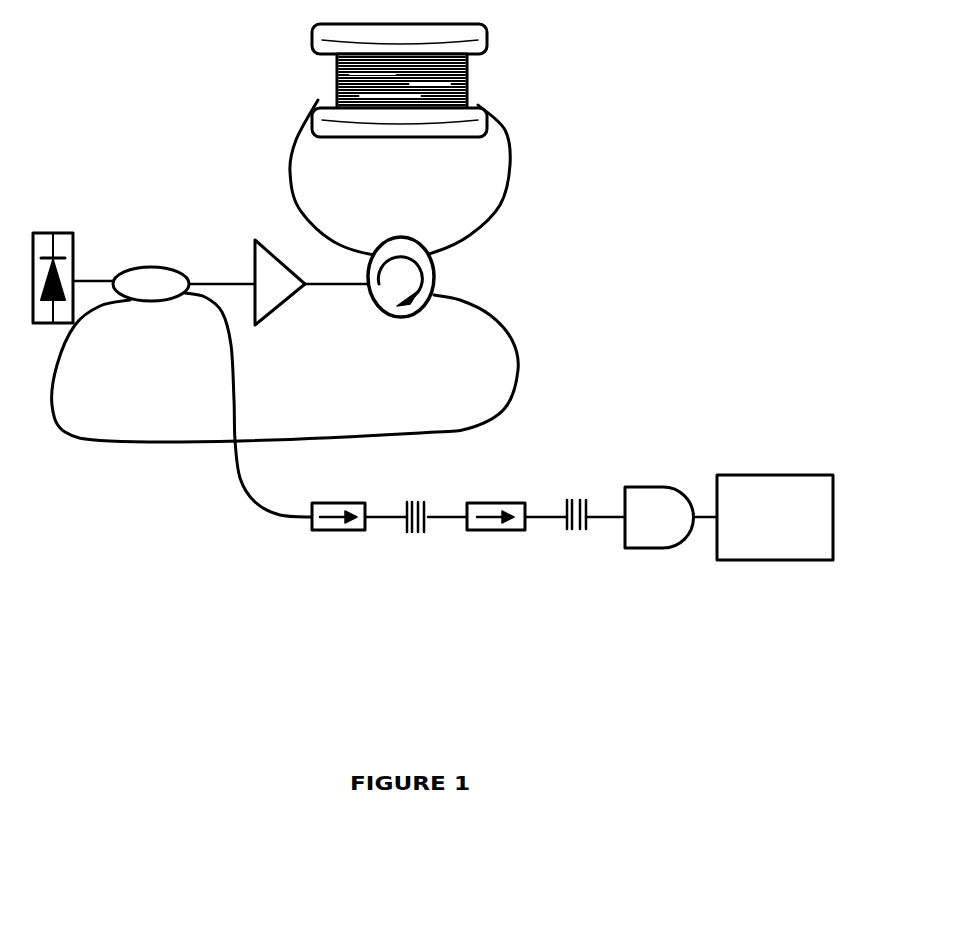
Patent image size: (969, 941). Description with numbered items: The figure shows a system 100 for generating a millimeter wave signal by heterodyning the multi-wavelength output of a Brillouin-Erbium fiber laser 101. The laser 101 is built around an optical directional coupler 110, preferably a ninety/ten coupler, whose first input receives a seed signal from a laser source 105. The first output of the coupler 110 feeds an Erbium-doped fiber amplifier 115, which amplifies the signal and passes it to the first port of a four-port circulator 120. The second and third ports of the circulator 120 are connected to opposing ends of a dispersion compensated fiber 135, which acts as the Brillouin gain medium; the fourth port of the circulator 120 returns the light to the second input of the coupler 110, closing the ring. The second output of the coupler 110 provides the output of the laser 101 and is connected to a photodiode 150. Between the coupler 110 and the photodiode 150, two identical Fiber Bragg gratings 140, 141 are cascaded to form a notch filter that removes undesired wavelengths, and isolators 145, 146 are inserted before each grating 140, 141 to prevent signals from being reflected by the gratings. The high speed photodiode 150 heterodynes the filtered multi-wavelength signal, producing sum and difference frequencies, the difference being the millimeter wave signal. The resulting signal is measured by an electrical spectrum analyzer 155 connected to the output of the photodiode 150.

The system 100 is at (665, 68).
The Brillouin-Erbium fiber laser 101 is at (178, 138).
The laser source 105 is at (73, 222).
The optical directional coupler 110 is at (142, 262).
The Erbium-doped fiber amplifier 115 is at (248, 240).
The four-port circulator 120 is at (437, 273).
The dispersion compensated fiber 135 is at (490, 85).
The Fiber Bragg grating 140 is at (418, 533).
The Fiber Bragg grating 141 is at (575, 530).
The isolator 145 is at (332, 533).
The isolator 146 is at (506, 533).
The photodiode 150 is at (645, 552).
The electrical spectrum analyzer 155 is at (768, 563).